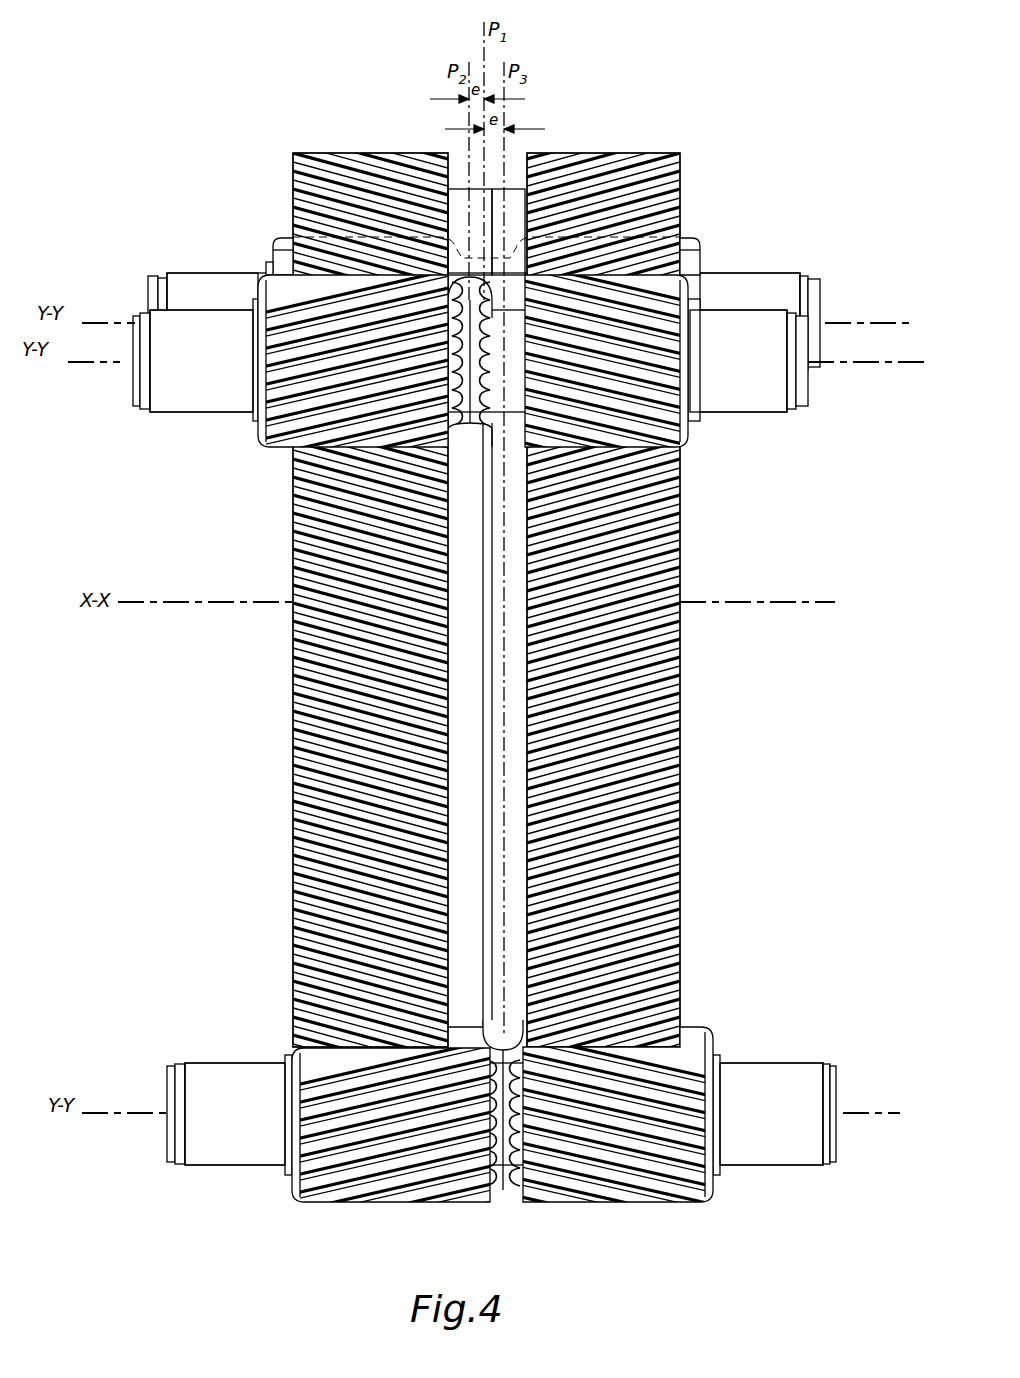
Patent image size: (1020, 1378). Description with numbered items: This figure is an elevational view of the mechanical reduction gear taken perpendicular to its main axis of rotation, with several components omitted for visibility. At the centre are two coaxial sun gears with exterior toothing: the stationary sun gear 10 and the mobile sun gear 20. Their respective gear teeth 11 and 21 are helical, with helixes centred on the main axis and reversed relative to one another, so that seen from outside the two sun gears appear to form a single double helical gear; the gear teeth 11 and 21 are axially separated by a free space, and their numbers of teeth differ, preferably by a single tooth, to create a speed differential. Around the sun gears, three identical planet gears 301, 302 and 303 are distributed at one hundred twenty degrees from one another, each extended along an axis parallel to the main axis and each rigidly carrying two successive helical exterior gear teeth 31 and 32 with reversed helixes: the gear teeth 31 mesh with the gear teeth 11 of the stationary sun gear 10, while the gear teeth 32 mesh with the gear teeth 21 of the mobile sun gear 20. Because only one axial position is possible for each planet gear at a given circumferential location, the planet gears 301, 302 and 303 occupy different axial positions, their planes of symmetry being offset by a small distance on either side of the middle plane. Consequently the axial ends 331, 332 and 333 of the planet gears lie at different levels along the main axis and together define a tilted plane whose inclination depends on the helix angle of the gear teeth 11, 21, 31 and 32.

The stationary sun gear 10 is at (705, 602).
The gear teeth of the stationary sun gear 11 is at (618, 168).
The mobile sun gear 20 is at (274, 593).
The gear teeth of the mobile sun gear 21 is at (343, 172).
The planet gear 301 is at (451, 269).
The planet gear 302 is at (423, 393).
The planet gear 303 is at (476, 1107).
The gear teeth of the planet gear 31 is at (688, 240).
The gear teeth of the planet gear 32 is at (290, 250).
The axial end of the planet gear 331 is at (224, 280).
The axial end of the planet gear 332 is at (210, 392).
The axial end of the planet gear 333 is at (215, 1085).